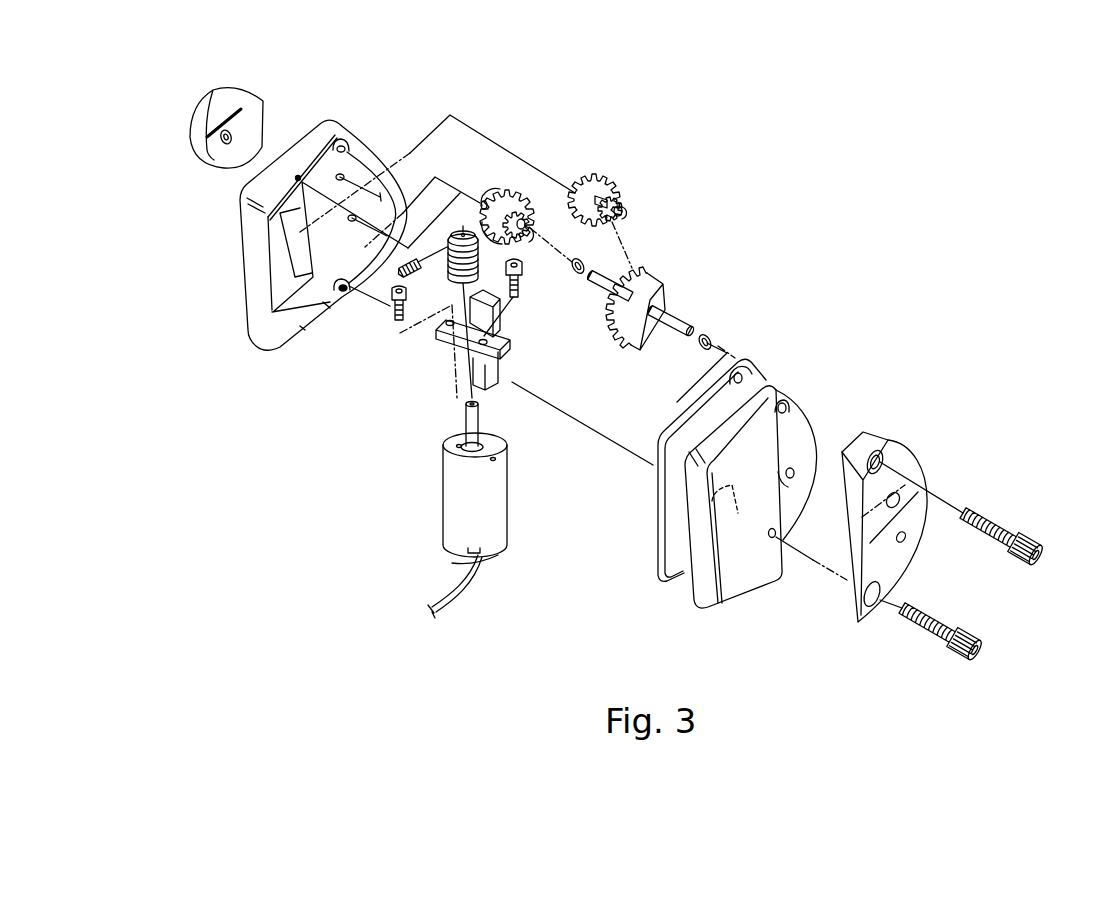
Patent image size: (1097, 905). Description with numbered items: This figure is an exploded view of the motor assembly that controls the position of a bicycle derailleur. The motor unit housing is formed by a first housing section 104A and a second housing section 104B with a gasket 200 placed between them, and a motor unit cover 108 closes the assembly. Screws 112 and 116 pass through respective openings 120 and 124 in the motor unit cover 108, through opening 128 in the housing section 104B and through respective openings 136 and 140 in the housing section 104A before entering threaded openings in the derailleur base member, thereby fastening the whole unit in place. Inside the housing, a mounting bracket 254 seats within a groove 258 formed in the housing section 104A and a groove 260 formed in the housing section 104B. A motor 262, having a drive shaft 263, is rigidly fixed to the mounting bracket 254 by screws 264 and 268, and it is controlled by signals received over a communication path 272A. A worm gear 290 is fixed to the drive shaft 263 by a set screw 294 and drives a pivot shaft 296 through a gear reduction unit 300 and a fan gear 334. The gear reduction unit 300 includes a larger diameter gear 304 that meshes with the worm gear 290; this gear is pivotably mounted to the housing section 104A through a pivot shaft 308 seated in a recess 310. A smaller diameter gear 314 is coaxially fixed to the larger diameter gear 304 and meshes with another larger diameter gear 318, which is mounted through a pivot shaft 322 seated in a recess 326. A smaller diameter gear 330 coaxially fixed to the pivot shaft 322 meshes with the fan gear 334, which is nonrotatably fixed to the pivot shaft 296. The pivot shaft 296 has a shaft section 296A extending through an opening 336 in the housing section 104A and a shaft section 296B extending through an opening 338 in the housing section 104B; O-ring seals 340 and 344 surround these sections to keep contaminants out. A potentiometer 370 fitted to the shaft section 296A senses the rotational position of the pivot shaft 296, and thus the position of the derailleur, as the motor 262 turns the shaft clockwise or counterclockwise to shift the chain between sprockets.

The housing section 104A is at (250, 288).
The housing section 104B is at (707, 601).
The motor unit cover 108 is at (905, 462).
The screw 112 is at (1033, 537).
The screw 116 is at (972, 633).
The opening 120 is at (888, 442).
The opening 124 is at (872, 607).
The opening 128 is at (783, 404).
The opening 136 is at (341, 146).
The opening 140 is at (343, 293).
The gasket 200 is at (659, 510).
The mounting bracket 254 is at (501, 351).
The groove 258 is at (300, 245).
The groove 260 is at (740, 514).
The motor 262 is at (509, 492).
The drive shaft 263 is at (479, 415).
The screw 264 is at (398, 318).
The screw 268 is at (523, 278).
The communication path 272A is at (481, 578).
The worm gear 290 is at (447, 268).
The set screw 294 is at (407, 264).
The pivot shaft 296 is at (661, 314).
The shaft section 296A is at (610, 272).
The shaft section 296B is at (688, 323).
The gear reduction unit 300 is at (578, 112).
The larger diameter gear 304 is at (507, 190).
The pivot shaft 308 is at (488, 203).
The recess 310 is at (299, 175).
The smaller diameter gear 314 is at (529, 216).
The larger diameter gear 318 is at (589, 175).
The pivot shaft 322 is at (612, 190).
The recess 326 is at (342, 175).
The smaller diameter gear 330 is at (626, 206).
The fan gear 334 is at (637, 337).
The opening 336 is at (428, 177).
The opening 338 is at (792, 479).
The O-ring seal 340 is at (579, 258).
The O-ring seal 344 is at (716, 338).
The potentiometer 370 is at (213, 95).